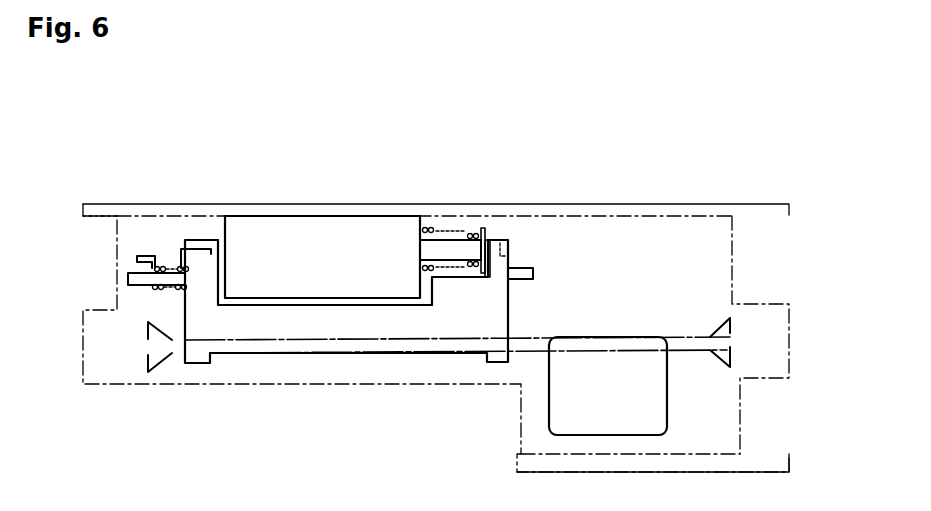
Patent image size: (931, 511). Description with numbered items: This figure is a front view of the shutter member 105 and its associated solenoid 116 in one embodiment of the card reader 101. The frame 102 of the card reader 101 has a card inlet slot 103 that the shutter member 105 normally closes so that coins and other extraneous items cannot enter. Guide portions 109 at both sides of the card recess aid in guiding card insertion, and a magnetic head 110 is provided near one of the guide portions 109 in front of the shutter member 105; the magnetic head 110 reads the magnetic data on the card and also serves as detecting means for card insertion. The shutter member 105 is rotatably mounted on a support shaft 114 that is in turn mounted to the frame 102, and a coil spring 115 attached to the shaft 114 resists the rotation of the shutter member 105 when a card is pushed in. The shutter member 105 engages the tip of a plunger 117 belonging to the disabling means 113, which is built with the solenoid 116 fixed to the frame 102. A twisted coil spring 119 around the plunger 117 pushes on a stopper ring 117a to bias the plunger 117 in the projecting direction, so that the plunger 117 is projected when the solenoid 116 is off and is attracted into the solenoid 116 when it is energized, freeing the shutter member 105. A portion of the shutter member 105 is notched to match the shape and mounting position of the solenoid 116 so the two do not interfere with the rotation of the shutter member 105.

The card reader 101 is at (80, 180).
The frame 102 is at (777, 302).
The card inlet slot 103 is at (311, 349).
The shutter member 105 is at (497, 303).
The guide portions 109 is at (134, 347).
The magnetic head 110 is at (652, 395).
The disabling means 113 is at (500, 223).
The support shaft 114 is at (135, 281).
The coil spring 115 is at (152, 255).
The solenoid 116 is at (303, 240).
The plunger 117 is at (458, 244).
The stopper ring 117a is at (483, 227).
The twisted coil spring 119 is at (427, 227).